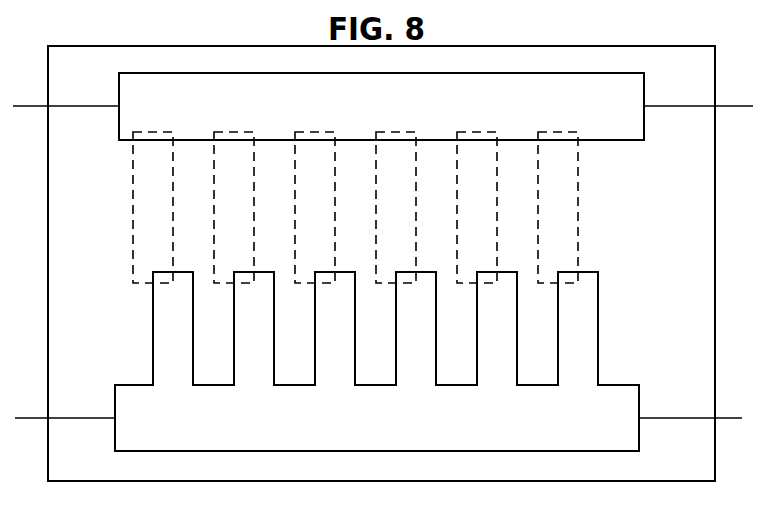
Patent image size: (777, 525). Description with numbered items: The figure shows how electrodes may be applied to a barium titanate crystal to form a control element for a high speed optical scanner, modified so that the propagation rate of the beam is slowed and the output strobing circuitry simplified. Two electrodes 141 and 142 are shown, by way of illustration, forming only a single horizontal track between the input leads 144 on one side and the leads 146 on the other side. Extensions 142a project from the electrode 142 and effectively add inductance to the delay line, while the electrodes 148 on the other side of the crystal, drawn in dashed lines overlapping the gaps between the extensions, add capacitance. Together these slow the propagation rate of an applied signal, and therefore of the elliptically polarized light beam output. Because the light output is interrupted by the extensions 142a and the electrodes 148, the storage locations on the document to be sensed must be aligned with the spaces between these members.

The electrode 141 is at (244, 83).
The electrode 142 is at (172, 447).
The extensions 142a is at (240, 357).
The input leads 144 is at (88, 106).
The right lead wires 146 is at (684, 109).
The electrodes 148 is at (214, 220).